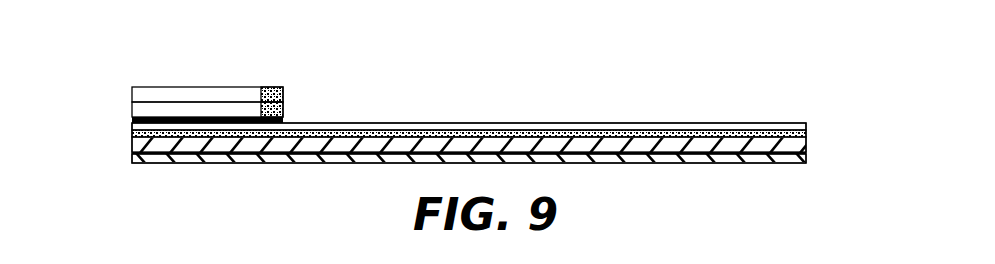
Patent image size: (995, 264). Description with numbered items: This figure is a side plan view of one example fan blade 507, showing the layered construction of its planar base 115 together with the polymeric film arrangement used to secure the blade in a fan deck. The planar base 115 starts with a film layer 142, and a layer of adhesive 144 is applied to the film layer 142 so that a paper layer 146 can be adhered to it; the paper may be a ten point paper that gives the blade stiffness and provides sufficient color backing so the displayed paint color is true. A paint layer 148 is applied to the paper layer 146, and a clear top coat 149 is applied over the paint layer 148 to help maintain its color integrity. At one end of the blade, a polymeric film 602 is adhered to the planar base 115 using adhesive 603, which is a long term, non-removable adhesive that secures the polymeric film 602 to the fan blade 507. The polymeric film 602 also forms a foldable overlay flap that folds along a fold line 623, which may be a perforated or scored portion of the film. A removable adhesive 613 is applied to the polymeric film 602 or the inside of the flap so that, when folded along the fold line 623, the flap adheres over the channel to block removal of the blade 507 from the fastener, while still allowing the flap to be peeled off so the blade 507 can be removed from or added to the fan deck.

The fan blade 507 is at (547, 60).
The planar base 115 is at (627, 95).
The clear top coat 149 is at (806, 127).
The paint layer 148 is at (806, 133).
The paper layer 146 is at (806, 142).
The adhesive 144 is at (806, 152).
The film layer 142 is at (806, 157).
The fold line 623 is at (132, 101).
The polymeric film 602 is at (132, 111).
The removable adhesive 613 is at (289, 94).
The adhesive 603 is at (285, 121).